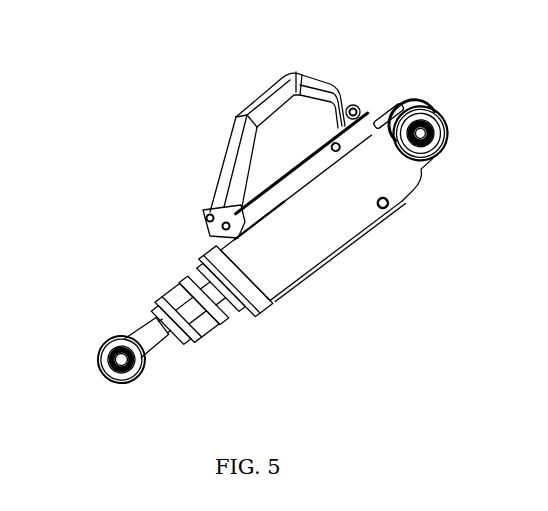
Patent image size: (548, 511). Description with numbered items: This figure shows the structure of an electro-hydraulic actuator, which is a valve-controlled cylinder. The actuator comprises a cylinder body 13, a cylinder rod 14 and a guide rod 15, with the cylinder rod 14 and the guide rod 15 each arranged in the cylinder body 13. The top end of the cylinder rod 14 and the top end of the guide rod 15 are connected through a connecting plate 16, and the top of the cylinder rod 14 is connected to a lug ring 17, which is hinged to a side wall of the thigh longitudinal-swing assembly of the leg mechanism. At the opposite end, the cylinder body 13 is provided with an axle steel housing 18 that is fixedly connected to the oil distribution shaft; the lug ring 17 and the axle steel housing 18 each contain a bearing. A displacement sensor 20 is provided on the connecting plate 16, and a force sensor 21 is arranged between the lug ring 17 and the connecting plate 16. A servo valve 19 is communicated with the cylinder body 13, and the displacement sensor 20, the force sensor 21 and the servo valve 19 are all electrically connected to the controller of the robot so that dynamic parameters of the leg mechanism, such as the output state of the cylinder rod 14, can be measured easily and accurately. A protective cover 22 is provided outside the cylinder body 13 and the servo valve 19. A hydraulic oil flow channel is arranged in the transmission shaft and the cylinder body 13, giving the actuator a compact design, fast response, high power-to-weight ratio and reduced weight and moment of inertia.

The cylinder body 13 is at (365, 208).
The cylinder rod 14 is at (212, 280).
The guide rod 15 is at (237, 313).
The connecting plate 16 is at (220, 325).
The lug ring 17 is at (143, 327).
The axle steel housing 18 is at (426, 104).
The servo valve 19 is at (322, 142).
The displacement sensor 20 is at (245, 308).
The force sensor 21 is at (180, 283).
The protective cover 22 is at (270, 165).